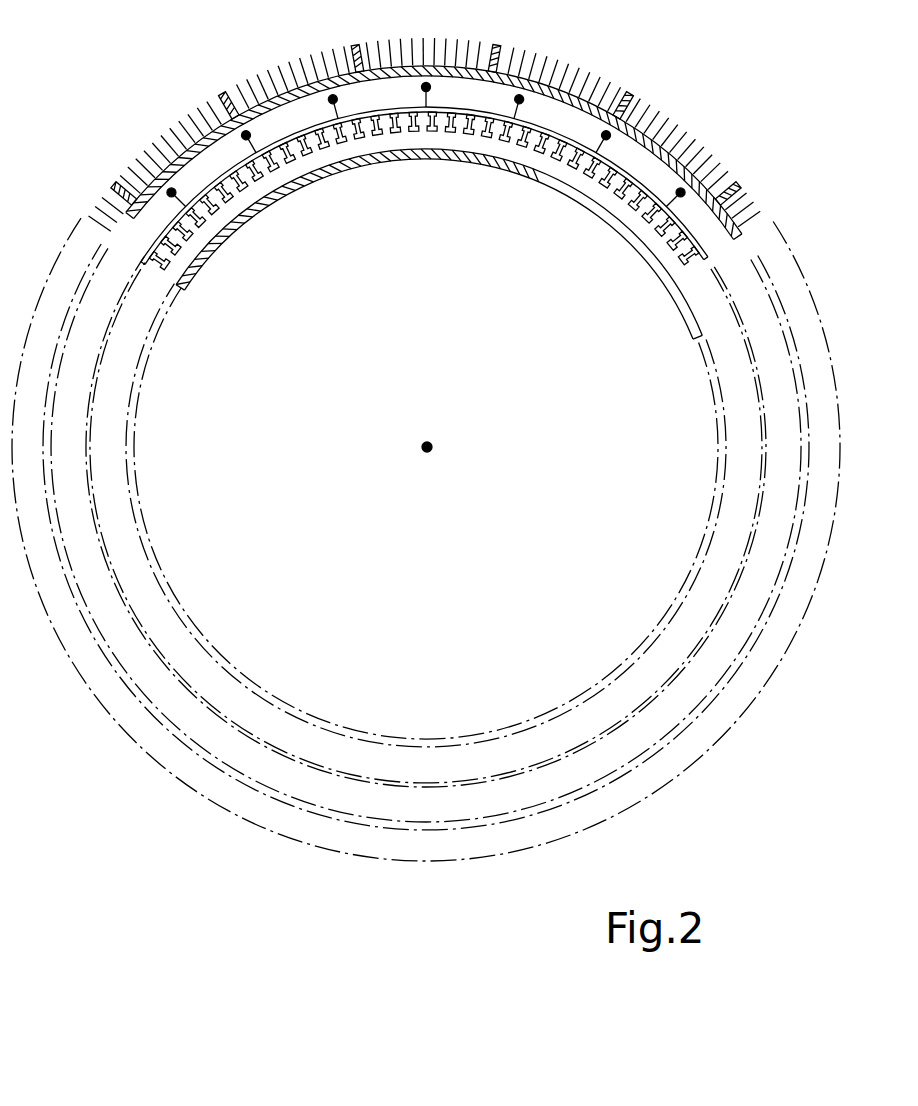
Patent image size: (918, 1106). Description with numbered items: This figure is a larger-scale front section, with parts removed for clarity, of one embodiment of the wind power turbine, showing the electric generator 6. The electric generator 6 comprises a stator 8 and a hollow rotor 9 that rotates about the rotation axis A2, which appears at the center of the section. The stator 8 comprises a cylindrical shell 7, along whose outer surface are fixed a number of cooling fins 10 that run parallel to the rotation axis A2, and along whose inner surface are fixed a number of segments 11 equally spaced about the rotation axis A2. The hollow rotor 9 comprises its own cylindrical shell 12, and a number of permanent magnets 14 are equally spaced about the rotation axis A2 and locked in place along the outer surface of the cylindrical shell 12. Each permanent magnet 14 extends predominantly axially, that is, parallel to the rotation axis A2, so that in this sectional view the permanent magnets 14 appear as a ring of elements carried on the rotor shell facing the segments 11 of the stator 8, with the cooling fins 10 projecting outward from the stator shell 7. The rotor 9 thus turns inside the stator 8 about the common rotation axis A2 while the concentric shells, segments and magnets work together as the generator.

The electric generator 6 is at (689, 75).
The cylindrical shell 7 is at (709, 153).
The stator 8 is at (765, 191).
The hollow rotor 9 is at (640, 272).
The cooling fins 10 is at (133, 185).
The segments 11 is at (157, 221).
The cylindrical shell 12 is at (593, 205).
The permanent magnets 14 is at (217, 207).
The rotation axis A2 is at (433, 450).